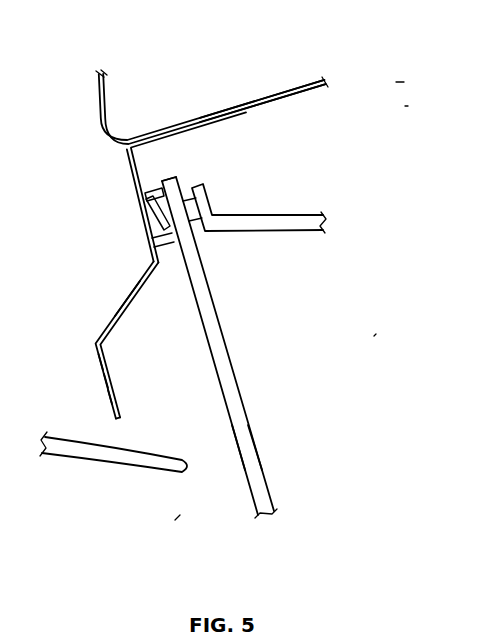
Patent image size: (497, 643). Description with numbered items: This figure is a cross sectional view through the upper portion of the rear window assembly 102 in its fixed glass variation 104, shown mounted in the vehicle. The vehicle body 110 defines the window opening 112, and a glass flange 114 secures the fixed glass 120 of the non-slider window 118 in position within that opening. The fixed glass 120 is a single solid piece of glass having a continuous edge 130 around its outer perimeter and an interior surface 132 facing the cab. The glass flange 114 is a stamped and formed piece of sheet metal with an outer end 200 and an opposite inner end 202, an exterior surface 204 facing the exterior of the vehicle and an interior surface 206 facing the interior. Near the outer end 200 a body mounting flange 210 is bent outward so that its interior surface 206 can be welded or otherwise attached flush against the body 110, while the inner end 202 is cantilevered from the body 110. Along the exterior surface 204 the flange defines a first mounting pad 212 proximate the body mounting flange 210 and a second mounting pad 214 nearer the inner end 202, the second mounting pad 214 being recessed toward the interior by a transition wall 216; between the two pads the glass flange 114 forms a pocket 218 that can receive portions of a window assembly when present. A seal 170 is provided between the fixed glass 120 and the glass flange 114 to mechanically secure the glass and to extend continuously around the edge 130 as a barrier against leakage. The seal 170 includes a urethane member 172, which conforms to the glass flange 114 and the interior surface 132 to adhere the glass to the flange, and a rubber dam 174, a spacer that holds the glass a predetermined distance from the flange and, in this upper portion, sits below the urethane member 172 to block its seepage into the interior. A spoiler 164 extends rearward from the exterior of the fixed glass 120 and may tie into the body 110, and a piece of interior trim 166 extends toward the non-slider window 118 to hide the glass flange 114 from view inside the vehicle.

The rear window assembly 102 is at (366, 130).
The fixed glass variation 104 is at (333, 377).
The body 110 is at (299, 82).
The window opening 112 is at (331, 143).
The glass flange 114 is at (138, 297).
The non-slider window 118 is at (266, 450).
The fixed glass 120 is at (222, 343).
The edge 130 is at (165, 180).
The interior surface 132 is at (237, 447).
The spoiler 164 is at (280, 224).
The interior trim 166 is at (121, 462).
The seal 170 is at (149, 232).
The urethane member 172 is at (146, 198).
The rubber dam 174 is at (157, 250).
The outer end 200 is at (262, 108).
The inner end 202 is at (120, 418).
The exterior surface 204 is at (123, 407).
The interior surface 206 is at (110, 386).
The body mounting flange 210 is at (232, 121).
The first mounting pad 212 is at (140, 178).
The second mounting pad 214 is at (110, 374).
The transition wall 216 is at (124, 318).
The pocket 218 is at (189, 370).